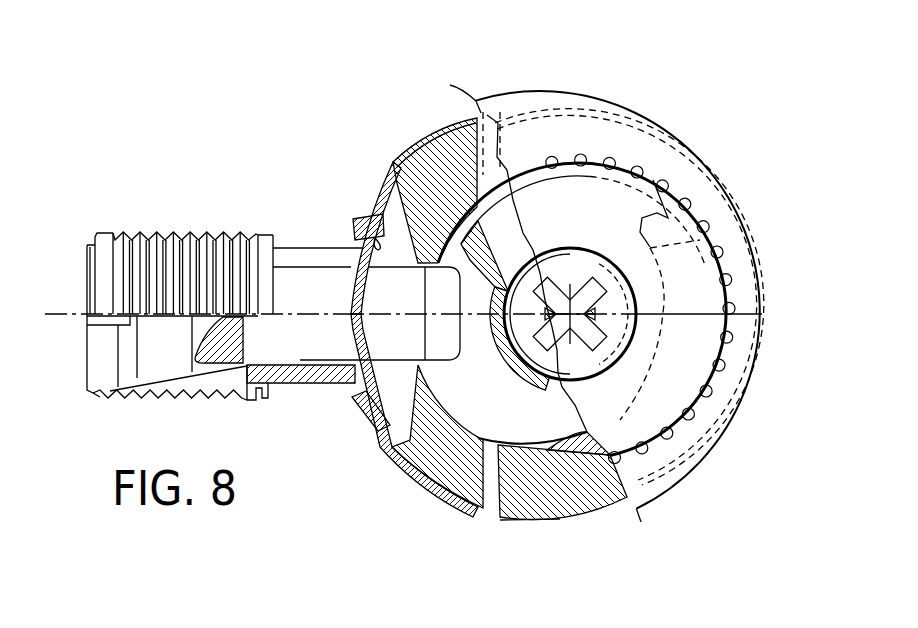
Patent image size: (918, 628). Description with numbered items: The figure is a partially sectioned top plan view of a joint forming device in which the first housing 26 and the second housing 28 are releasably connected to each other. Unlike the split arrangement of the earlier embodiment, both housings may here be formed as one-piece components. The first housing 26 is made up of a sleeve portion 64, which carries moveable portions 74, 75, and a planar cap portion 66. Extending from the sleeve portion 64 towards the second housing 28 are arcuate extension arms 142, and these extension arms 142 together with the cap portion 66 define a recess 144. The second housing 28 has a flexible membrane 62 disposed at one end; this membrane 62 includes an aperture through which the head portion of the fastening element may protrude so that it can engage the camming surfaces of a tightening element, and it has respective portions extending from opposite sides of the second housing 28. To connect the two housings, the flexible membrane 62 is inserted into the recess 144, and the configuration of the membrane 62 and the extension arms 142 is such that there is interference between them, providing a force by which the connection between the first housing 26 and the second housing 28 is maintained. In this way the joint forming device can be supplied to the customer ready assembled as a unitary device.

The first housing 26 is at (774, 251).
The second housing 28 is at (222, 222).
The flexible membrane 62 is at (362, 218).
The sleeve portion 64 is at (465, 490).
The planar cap portion 66 is at (650, 497).
The moveable portion 74 is at (560, 507).
The moveable portion 75 is at (593, 143).
The arcuate extension arms 142 is at (377, 178).
The recess 144 is at (390, 418).